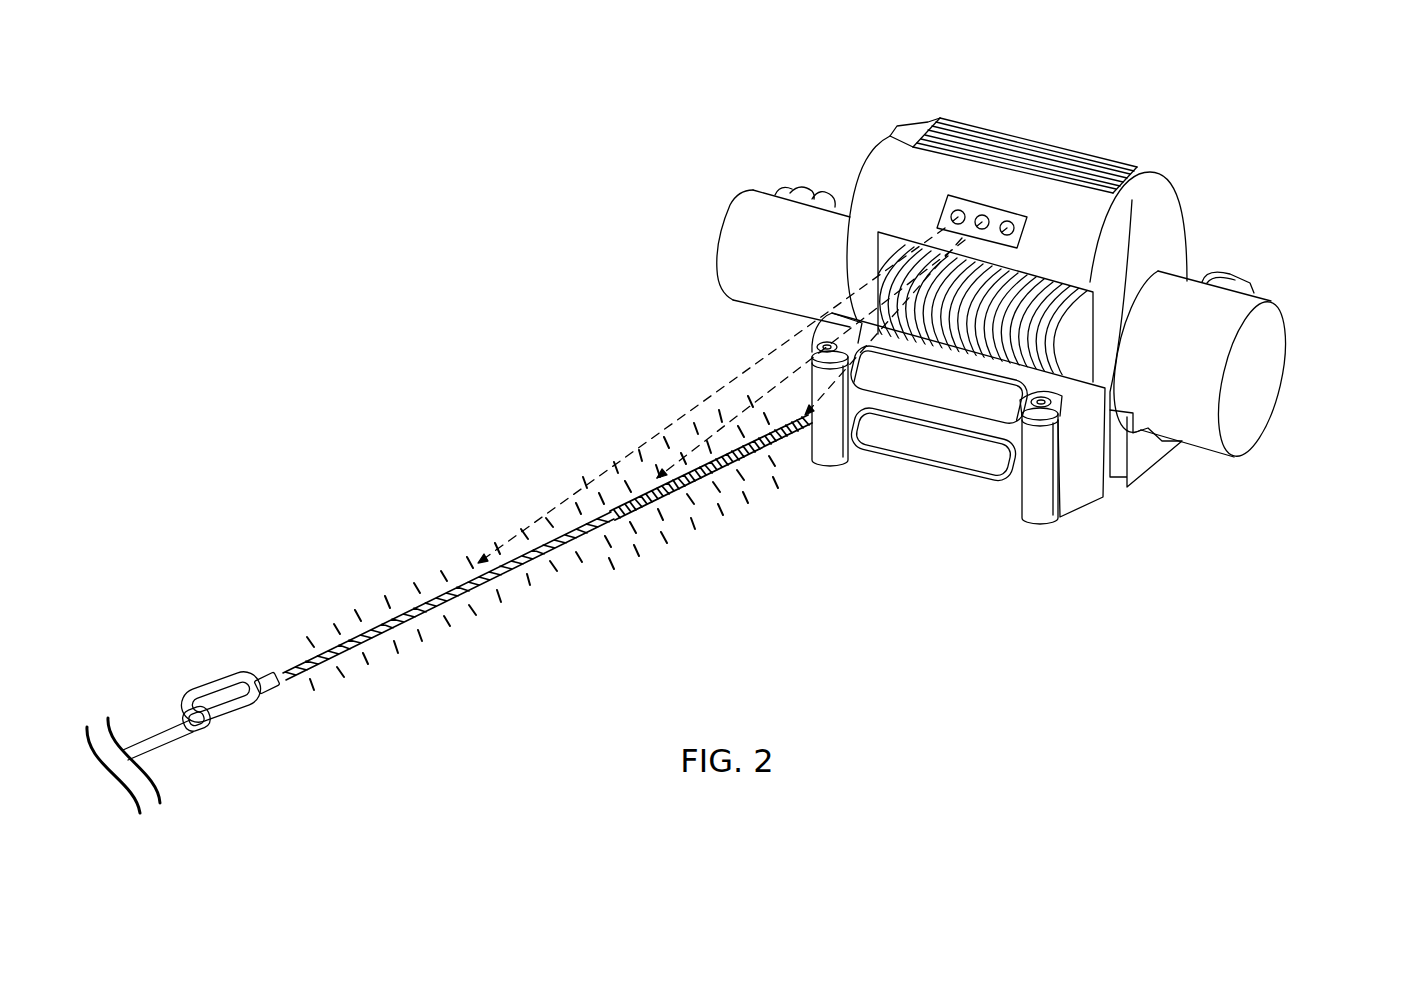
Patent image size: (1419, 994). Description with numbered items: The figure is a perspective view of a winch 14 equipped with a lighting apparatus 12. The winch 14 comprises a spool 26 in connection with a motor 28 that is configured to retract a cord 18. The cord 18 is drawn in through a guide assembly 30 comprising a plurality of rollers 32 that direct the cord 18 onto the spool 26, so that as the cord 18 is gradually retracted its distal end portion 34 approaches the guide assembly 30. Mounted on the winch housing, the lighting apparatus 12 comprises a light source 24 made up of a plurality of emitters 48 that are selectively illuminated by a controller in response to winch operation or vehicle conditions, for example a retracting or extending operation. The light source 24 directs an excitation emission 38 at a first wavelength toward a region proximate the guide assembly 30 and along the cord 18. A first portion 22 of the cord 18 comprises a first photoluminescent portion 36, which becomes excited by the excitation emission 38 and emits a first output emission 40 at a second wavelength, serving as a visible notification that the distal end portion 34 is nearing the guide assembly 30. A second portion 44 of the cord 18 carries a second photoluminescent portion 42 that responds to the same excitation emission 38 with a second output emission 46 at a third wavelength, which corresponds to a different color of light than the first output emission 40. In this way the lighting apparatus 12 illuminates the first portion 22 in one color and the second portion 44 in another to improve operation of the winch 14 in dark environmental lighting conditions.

The lighting apparatus 12 is at (948, 172).
The winch 14 is at (1333, 271).
The cord 18 is at (425, 572).
The first portion 22 is at (329, 703).
The light source 24 is at (1015, 217).
The spool 26 is at (1047, 297).
The motor 28 is at (818, 175).
The guide assembly 30 is at (958, 447).
The rollers 32 is at (898, 432).
The distal end portion 34 is at (270, 612).
The first photoluminescent portion 36 is at (335, 657).
The excitation emission 38 is at (828, 393).
The first output emission 40 is at (470, 618).
The second photoluminescent portion 42 is at (711, 503).
The second portion 44 is at (643, 520).
The second output emission 46 is at (618, 545).
The emitters 48 is at (1007, 221).